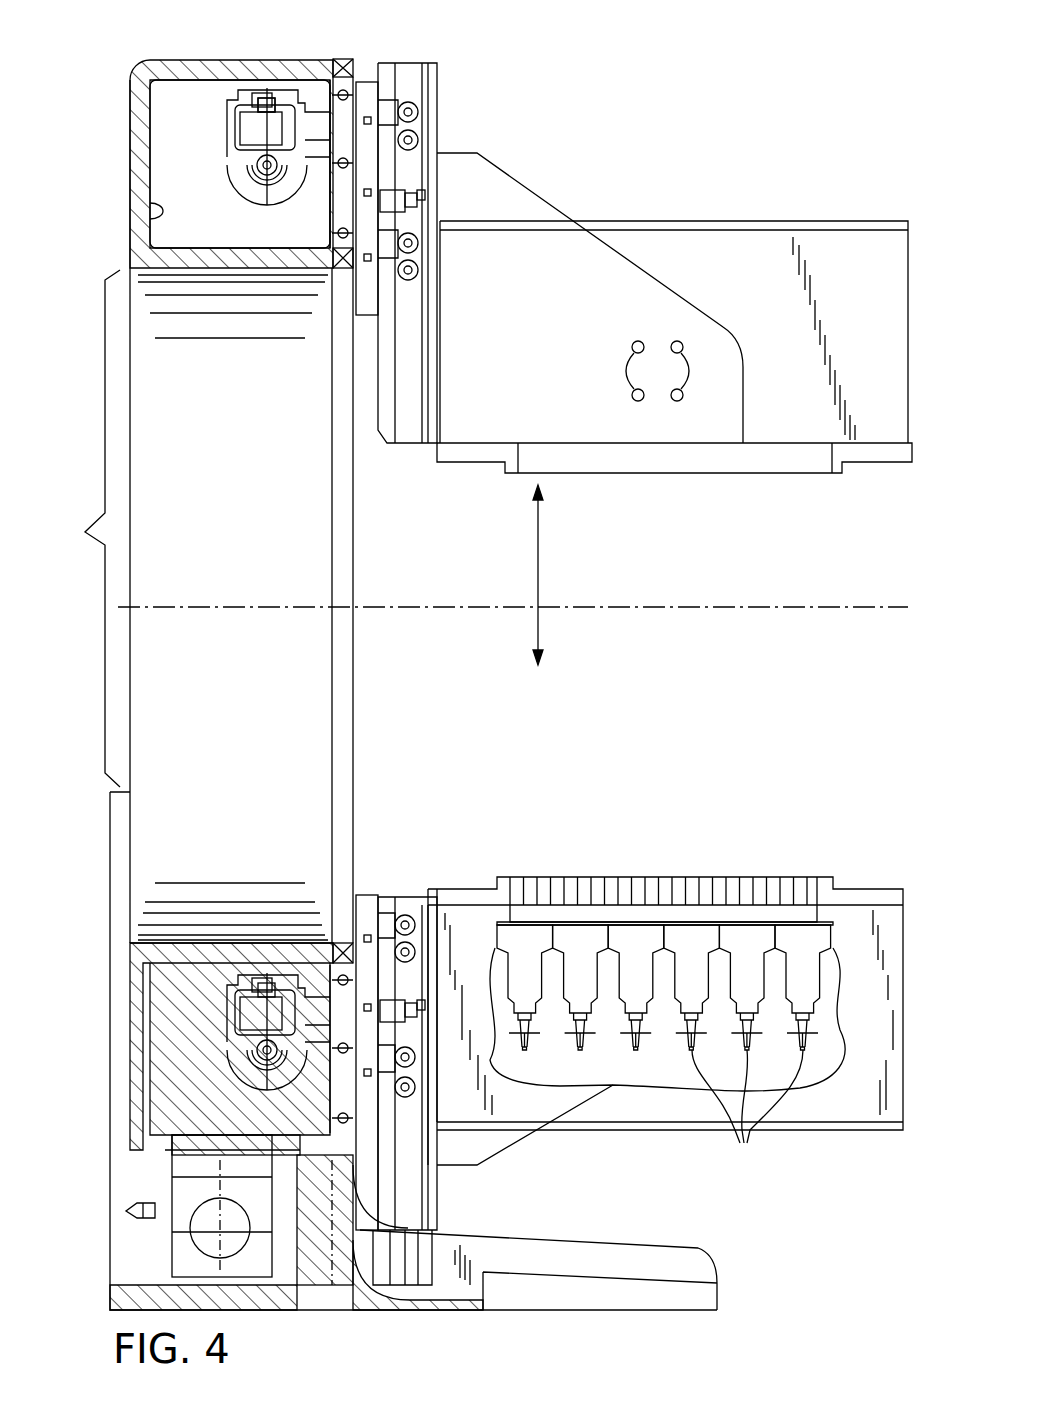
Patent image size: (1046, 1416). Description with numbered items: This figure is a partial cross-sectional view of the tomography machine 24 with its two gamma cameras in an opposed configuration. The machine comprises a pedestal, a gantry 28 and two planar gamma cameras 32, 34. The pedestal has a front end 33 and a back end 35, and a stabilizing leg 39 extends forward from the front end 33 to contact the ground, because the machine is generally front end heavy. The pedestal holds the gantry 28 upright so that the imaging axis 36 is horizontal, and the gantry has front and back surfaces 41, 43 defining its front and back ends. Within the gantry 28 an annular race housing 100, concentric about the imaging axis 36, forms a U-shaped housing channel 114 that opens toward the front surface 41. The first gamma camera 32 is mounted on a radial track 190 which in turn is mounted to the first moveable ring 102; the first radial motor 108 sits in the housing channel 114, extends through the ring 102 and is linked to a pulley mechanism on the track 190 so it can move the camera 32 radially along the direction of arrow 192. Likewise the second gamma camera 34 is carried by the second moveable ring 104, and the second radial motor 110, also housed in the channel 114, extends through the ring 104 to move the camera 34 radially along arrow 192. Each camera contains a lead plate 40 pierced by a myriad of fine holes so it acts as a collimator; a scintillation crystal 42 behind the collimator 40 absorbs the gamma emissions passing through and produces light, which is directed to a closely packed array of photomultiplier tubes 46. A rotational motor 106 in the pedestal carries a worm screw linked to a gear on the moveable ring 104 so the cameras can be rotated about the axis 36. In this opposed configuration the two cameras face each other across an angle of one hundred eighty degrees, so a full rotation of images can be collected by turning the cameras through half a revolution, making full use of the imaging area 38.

The tomography machine 24 is at (331, 49).
The gantry 28 is at (177, 98).
The first gamma camera 32 is at (733, 258).
The front end 33 is at (407, 1228).
The second gamma camera 34 is at (838, 1112).
The back end 35 is at (110, 1252).
The imaging axis 36 is at (630, 607).
The imaging area 38 is at (190, 605).
The stabilizing leg 39 is at (592, 1263).
The lead plate 40 is at (712, 875).
The front surface 41 is at (378, 905).
The scintillation crystal 42 is at (815, 905).
The back surface 43 is at (140, 160).
The array of PMTs 46 is at (667, 1046).
The race housing 100 is at (138, 112).
The first moveable ring 102 is at (378, 102).
The second moveable ring 104 is at (340, 193).
The rotational motor 106 is at (197, 1200).
The first radial motor 108 is at (278, 105).
The second radial motor 110 is at (267, 1015).
The housing channel 114 is at (150, 217).
The radial track 190 is at (422, 152).
The arrow 192 is at (538, 537).